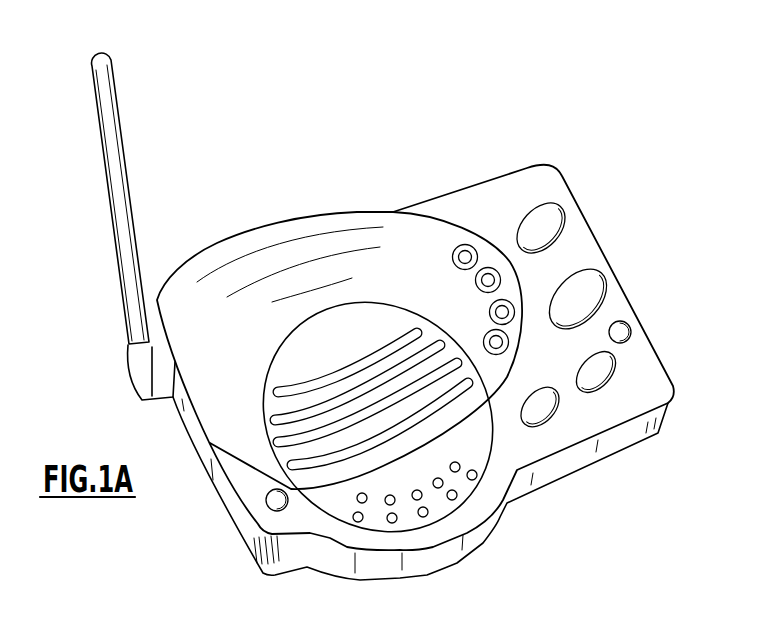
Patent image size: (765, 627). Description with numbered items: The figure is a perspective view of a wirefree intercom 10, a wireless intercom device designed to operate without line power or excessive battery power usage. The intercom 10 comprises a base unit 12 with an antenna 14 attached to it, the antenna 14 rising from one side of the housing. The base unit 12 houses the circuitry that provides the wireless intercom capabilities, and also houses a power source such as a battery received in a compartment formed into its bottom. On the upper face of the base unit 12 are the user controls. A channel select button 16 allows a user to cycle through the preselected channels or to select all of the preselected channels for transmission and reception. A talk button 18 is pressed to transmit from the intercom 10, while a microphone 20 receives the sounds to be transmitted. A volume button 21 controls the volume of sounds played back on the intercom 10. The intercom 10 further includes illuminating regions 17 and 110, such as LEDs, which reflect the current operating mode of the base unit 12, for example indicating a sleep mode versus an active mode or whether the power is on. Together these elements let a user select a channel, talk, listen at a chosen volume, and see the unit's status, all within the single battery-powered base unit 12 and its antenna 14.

The wirefree intercom 10 is at (256, 75).
The base unit 12 is at (441, 196).
The antenna 14 is at (112, 203).
The channel select button 16 is at (570, 215).
The illuminating region 17 is at (614, 372).
The talk button 18 is at (593, 283).
The microphone 20 is at (632, 330).
The volume button 21 is at (555, 417).
The illuminating regions 110 is at (483, 335).